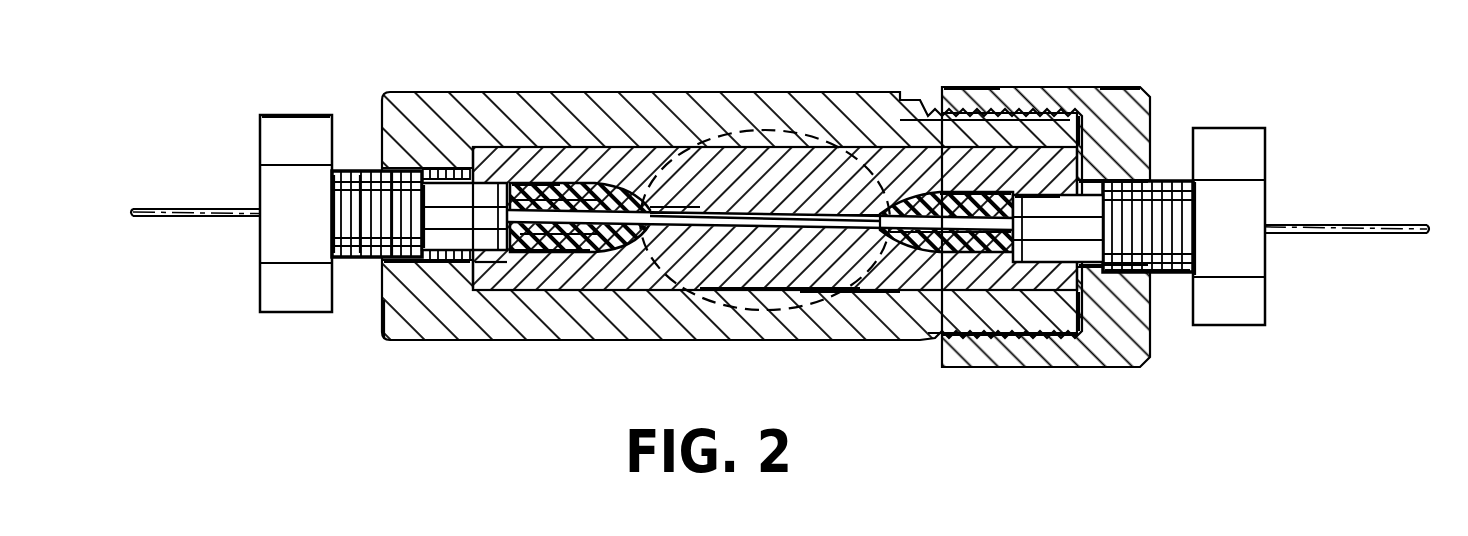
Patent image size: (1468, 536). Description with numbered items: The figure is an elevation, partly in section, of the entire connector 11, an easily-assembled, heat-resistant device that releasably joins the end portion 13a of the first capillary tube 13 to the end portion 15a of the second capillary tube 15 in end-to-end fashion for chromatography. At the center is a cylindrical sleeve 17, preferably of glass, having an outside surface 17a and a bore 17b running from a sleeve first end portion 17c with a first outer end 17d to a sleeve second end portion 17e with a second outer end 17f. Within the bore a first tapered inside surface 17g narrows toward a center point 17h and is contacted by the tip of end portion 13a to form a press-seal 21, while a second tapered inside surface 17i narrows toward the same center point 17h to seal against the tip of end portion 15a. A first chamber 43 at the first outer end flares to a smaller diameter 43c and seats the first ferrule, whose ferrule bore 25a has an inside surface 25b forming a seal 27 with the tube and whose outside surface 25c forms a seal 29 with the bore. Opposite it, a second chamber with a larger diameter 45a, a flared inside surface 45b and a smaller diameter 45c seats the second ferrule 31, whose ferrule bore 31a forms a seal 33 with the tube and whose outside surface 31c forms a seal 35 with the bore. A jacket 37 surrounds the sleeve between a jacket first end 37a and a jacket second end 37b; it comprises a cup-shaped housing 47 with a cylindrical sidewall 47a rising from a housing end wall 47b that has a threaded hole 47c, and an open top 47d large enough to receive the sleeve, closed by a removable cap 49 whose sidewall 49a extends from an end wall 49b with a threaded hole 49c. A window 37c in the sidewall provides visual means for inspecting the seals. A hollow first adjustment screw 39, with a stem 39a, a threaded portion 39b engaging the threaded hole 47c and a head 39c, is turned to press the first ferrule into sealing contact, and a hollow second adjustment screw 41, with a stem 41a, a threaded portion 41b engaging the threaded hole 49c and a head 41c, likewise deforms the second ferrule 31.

The connector 11 is at (798, 59).
The first capillary tube 13 is at (158, 215).
The end portion of first capillary tube 13a is at (700, 210).
The second capillary tube 15 is at (1387, 233).
The end portion of second capillary tube 15a is at (822, 210).
The cylindrical sleeve 17 is at (598, 118).
The outside surface of sleeve 17a is at (452, 168).
The bore 17b is at (615, 148).
The sleeve first end portion 17c is at (440, 300).
The first outer end 17d is at (398, 332).
The sleeve second end portion 17e is at (1084, 340).
The second outer end 17f is at (1130, 335).
The first tapered inside surface 17g is at (950, 150).
The center point 17h is at (790, 142).
The second tapered inside surface 17i is at (840, 300).
The press-seal 21 is at (730, 212).
The ferrule bore 25a is at (527, 252).
The inside surface of first ferrule bore 25b is at (515, 183).
The outside surface of first ferrule 25c is at (575, 252).
The seal 27 is at (525, 200).
The seal 29 is at (560, 190).
The second ferrule 31 is at (935, 200).
The ferrule bore 31a is at (990, 195).
The outside surface of second ferrule 31c is at (882, 205).
The seal 33 is at (945, 336).
The seal 35 is at (980, 340).
The jacket 37 is at (770, 160).
The jacket first end 37a is at (478, 290).
The jacket second end 37b is at (1040, 300).
The window 37c is at (780, 270).
The first adjustment screw 39 is at (272, 298).
The stem 39a is at (430, 258).
The threaded portion 39b is at (345, 172).
The head 39c is at (290, 128).
The second adjustment screw 41 is at (1252, 295).
The stem 41a is at (1112, 180).
The threaded portion 41b is at (1168, 274).
The head 41c is at (1255, 246).
The first chamber 43 is at (482, 252).
The smaller diameter of first chamber 43c is at (655, 200).
The larger diameter of second chamber 45a is at (1050, 195).
The inside surface of second chamber 45b is at (1020, 195).
The smaller diameter of second chamber 45c is at (900, 252).
The cup-shaped housing 47 is at (510, 186).
The cylindrical sidewall 47a is at (430, 183).
The housing end wall 47b is at (395, 178).
The threaded hole 47c is at (368, 180).
The open top 47d is at (1115, 182).
The cap 49 is at (1105, 130).
The cap sidewall 49a is at (956, 120).
The cap end wall 49b is at (1130, 130).
The threaded hole 49c is at (1165, 200).